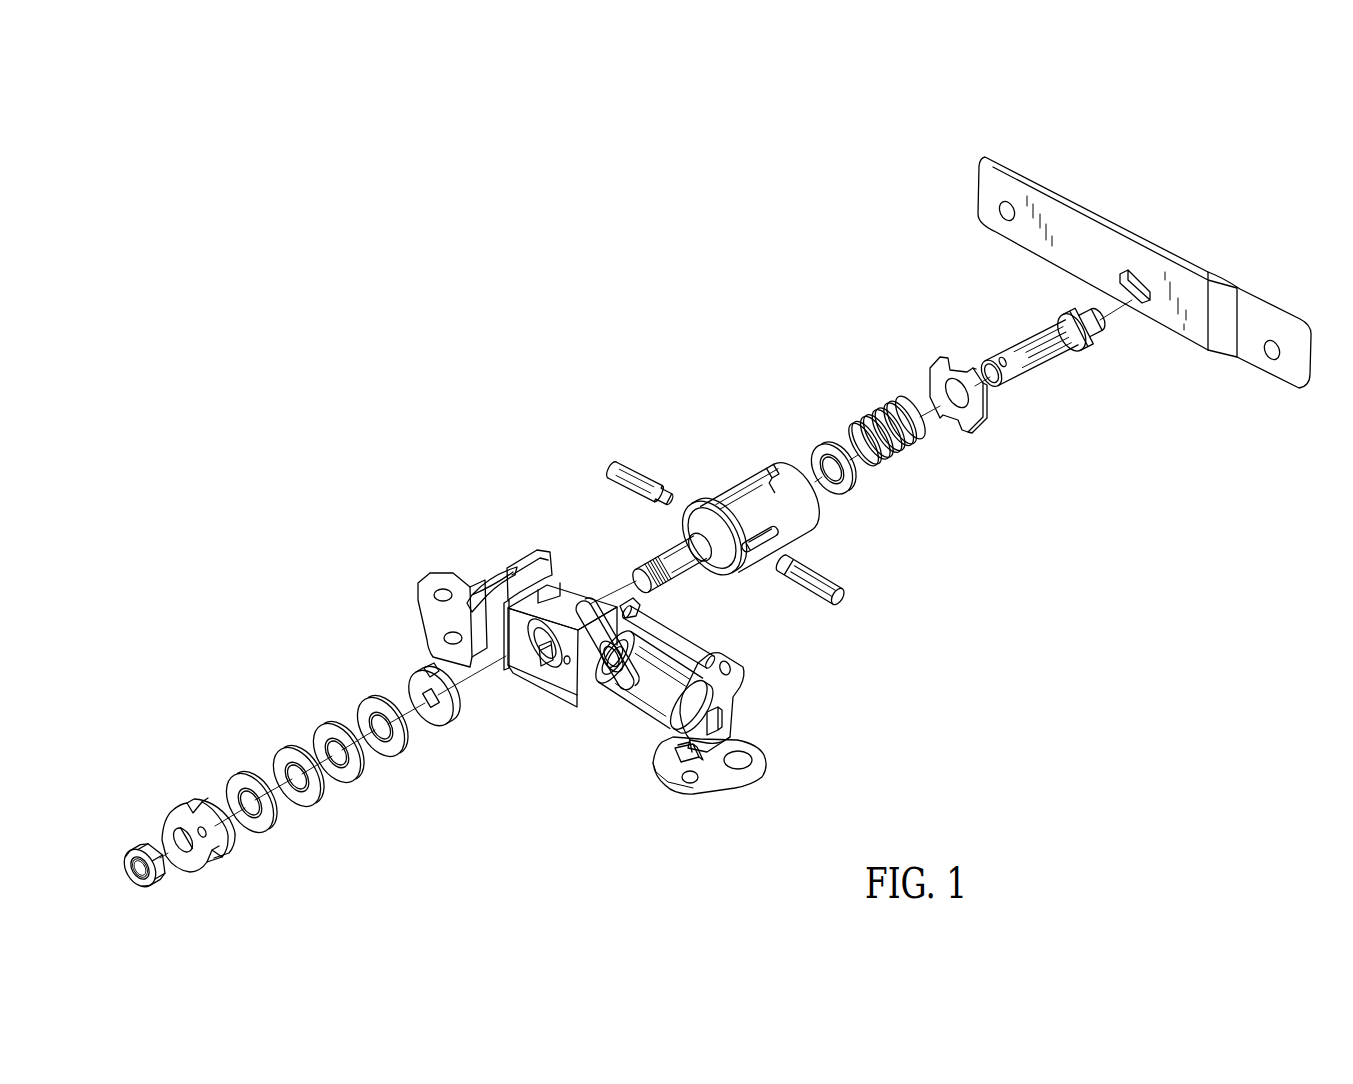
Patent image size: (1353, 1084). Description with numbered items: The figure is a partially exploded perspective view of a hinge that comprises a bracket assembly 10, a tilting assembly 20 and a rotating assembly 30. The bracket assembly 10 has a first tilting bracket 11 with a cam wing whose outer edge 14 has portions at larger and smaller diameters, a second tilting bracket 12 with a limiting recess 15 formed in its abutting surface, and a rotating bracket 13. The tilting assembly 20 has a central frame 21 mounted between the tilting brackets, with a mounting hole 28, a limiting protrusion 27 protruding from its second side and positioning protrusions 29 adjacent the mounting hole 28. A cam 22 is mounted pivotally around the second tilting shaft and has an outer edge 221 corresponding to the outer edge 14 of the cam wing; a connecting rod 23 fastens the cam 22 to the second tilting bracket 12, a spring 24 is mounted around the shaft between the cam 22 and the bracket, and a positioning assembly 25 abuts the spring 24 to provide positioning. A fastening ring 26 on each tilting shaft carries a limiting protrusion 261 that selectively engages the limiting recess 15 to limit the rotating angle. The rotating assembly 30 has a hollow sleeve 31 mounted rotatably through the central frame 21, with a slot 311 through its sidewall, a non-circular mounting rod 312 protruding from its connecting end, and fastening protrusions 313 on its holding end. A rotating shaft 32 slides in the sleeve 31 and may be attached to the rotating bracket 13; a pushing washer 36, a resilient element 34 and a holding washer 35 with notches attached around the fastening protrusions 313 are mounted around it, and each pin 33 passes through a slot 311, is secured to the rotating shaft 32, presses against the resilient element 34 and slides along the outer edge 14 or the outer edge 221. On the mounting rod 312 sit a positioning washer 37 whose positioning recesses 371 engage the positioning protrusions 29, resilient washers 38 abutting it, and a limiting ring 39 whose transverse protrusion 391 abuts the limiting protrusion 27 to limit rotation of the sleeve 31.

The bracket assembly 10 is at (396, 560).
The first tilting bracket 11 is at (430, 612).
The second tilting bracket 12 is at (727, 772).
The rotating bracket 13 is at (1098, 218).
The outer edge 14 is at (528, 560).
The limiting recess 15 is at (697, 757).
The tilting assembly 20 is at (784, 676).
The central frame 21 is at (583, 605).
The cam 22 is at (590, 680).
The outer edge 221 is at (633, 603).
The connecting rod 23 is at (697, 647).
The spring 24 is at (607, 687).
The positioning assembly 25 is at (644, 735).
The fastening ring 26 is at (730, 722).
The limiting protrusion 261 is at (472, 602).
The limiting protrusion 27 is at (503, 624).
The mounting hole 28 is at (547, 637).
The positioning protrusion 29 is at (550, 660).
The rotating assembly 30 is at (798, 371).
The sleeve 31 is at (740, 487).
The slot 311 is at (760, 539).
The mounting rod 312 is at (672, 563).
The fastening protrusion 313 is at (774, 478).
The rotating shaft 32 is at (1040, 358).
The pin 33 is at (642, 482).
The resilient element 34 is at (878, 412).
The holding washer 35 is at (972, 418).
The pushing washer 36 is at (843, 485).
The positioning washer 37 is at (443, 722).
The positioning recess 371 is at (435, 673).
The resilient washer 38 is at (350, 772).
The limiting ring 39 is at (170, 820).
The notch 391 is at (225, 847).